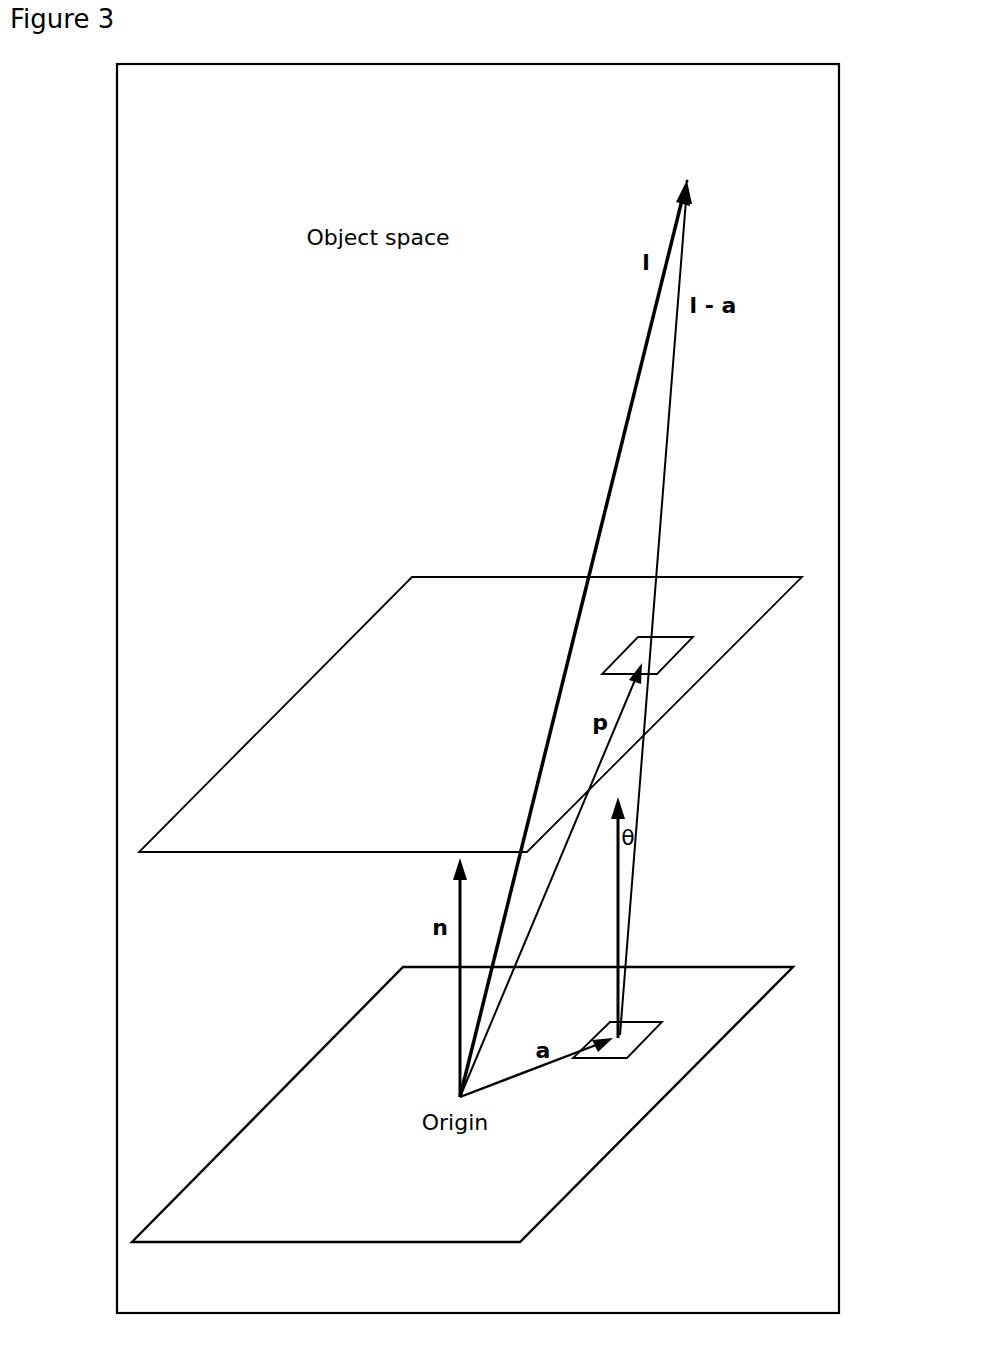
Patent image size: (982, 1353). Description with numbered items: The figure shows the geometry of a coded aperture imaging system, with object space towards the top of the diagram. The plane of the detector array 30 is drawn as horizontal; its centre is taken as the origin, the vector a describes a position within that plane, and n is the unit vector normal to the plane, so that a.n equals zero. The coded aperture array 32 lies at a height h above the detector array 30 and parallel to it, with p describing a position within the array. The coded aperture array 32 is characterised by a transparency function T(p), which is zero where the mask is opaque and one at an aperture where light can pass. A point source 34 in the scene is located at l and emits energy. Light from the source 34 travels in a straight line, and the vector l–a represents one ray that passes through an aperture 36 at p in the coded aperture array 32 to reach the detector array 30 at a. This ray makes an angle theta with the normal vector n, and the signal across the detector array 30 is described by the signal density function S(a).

The detector array 30 is at (717, 1005).
The coded aperture array 32 is at (715, 583).
The point source 34 is at (690, 184).
The aperture 36 is at (667, 658).